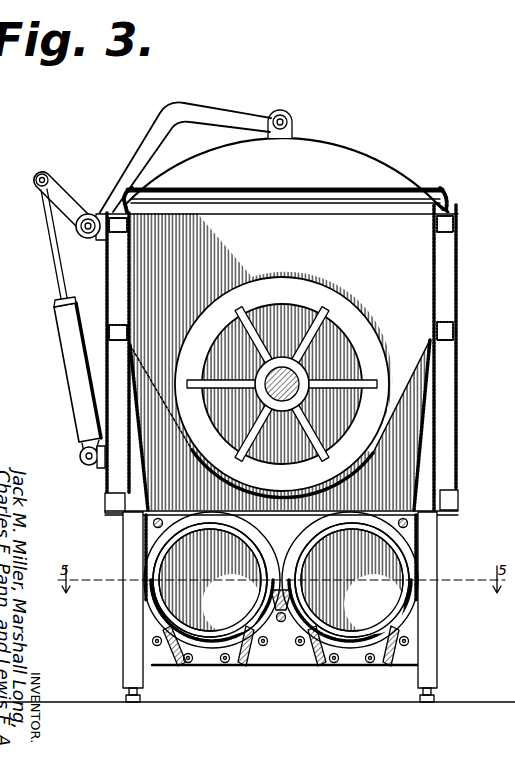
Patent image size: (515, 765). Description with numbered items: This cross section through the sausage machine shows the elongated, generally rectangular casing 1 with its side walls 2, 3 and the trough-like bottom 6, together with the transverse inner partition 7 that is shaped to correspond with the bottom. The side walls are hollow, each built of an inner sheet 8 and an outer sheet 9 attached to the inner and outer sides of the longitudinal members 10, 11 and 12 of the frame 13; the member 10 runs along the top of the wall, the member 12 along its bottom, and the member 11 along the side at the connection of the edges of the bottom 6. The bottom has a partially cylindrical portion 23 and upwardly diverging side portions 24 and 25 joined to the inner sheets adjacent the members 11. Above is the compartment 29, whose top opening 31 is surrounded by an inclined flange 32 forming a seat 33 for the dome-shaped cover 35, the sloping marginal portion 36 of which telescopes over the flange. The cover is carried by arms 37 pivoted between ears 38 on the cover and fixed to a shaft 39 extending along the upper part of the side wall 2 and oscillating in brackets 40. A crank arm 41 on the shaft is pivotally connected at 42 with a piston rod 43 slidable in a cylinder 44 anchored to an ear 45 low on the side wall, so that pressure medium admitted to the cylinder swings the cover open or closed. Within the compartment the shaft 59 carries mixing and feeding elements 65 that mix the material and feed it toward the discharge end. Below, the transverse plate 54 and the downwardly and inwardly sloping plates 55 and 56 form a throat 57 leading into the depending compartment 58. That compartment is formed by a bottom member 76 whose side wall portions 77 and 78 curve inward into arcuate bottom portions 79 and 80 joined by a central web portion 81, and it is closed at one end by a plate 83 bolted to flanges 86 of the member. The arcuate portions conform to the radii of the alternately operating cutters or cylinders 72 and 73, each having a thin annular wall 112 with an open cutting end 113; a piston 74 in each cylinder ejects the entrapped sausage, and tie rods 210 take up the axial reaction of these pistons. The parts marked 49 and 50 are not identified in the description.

The casing 1 is at (457, 210).
The side wall 2 is at (118, 290).
The side wall 3 is at (450, 295).
The bottom 6 is at (433, 292).
The transverse inner partition 7 is at (430, 258).
The inner sheet 8 is at (126, 362).
The outer sheet 9 is at (112, 302).
The longitudinal member 10 is at (455, 222).
The longitudinal member 11 is at (458, 328).
The longitudinal member 12 is at (458, 497).
The frame 13 is at (420, 520).
The partially cylindrical portion 23 is at (292, 513).
The side portion 24 is at (155, 380).
The side portion 25 is at (420, 362).
The compartment 29 is at (338, 208).
The top opening 31 is at (440, 196).
The flange 32 is at (196, 195).
The seat 33 is at (133, 188).
The cover 35 is at (375, 166).
The marginal portion 36 is at (449, 201).
The arm 37 is at (238, 116).
The ear 38 is at (290, 114).
The shaft 39 is at (88, 238).
The bracket 40 is at (78, 228).
The crank arm 41 is at (63, 188).
The pivotal connection 42 is at (40, 172).
The piston rod 43 is at (52, 266).
The cylinder 44 is at (66, 358).
The ear 45 is at (88, 465).
The leg 49 is at (123, 664).
The base 50 is at (330, 688).
The transverse plate 54 is at (425, 415).
The sloping plate 55 is at (130, 513).
The sloping plate 56 is at (420, 480).
The throat 57 is at (146, 528).
The depending compartment 58 is at (420, 550).
The shaft 59 is at (305, 380).
The mixing and feeding elements 65 is at (340, 432).
The cutter 72 is at (160, 595).
The cutter 73 is at (410, 608).
The piston 74 is at (207, 640).
The bottom member 76 is at (284, 628).
The side wall portion 77 is at (150, 548).
The side wall portion 78 is at (425, 570).
The arcuate bottom portion 79 is at (248, 652).
The arcuate bottom portion 80 is at (393, 652).
The web portion 81 is at (283, 600).
The plate 83 is at (412, 630).
The flange 86 is at (170, 655).
The annular wall 112 is at (160, 578).
The open end 113 is at (166, 612).
The tie rod 210 is at (333, 530).